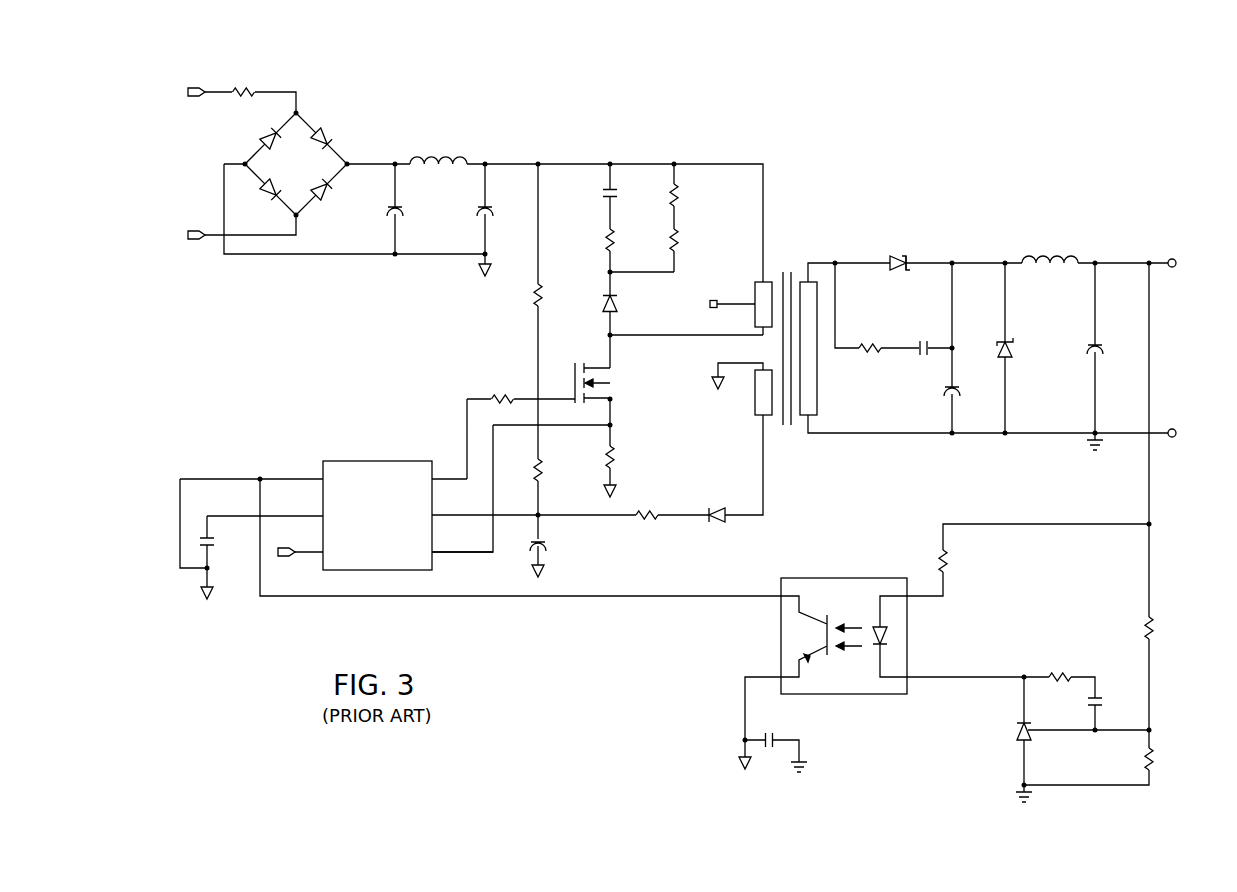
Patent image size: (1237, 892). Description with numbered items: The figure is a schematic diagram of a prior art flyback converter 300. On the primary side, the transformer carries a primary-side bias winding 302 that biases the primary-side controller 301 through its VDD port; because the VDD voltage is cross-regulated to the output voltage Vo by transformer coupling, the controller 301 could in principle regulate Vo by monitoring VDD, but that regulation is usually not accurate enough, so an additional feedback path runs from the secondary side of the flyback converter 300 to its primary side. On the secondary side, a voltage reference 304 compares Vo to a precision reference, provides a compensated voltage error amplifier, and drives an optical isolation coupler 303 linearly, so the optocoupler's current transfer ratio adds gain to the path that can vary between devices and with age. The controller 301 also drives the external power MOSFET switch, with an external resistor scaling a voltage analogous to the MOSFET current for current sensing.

The flyback converter 300 is at (936, 129).
The primary-side controller 301 is at (380, 461).
The primary-side bias winding 302 is at (755, 403).
The optical isolation coupler 303 is at (845, 694).
The voltage reference 304 is at (1022, 674).